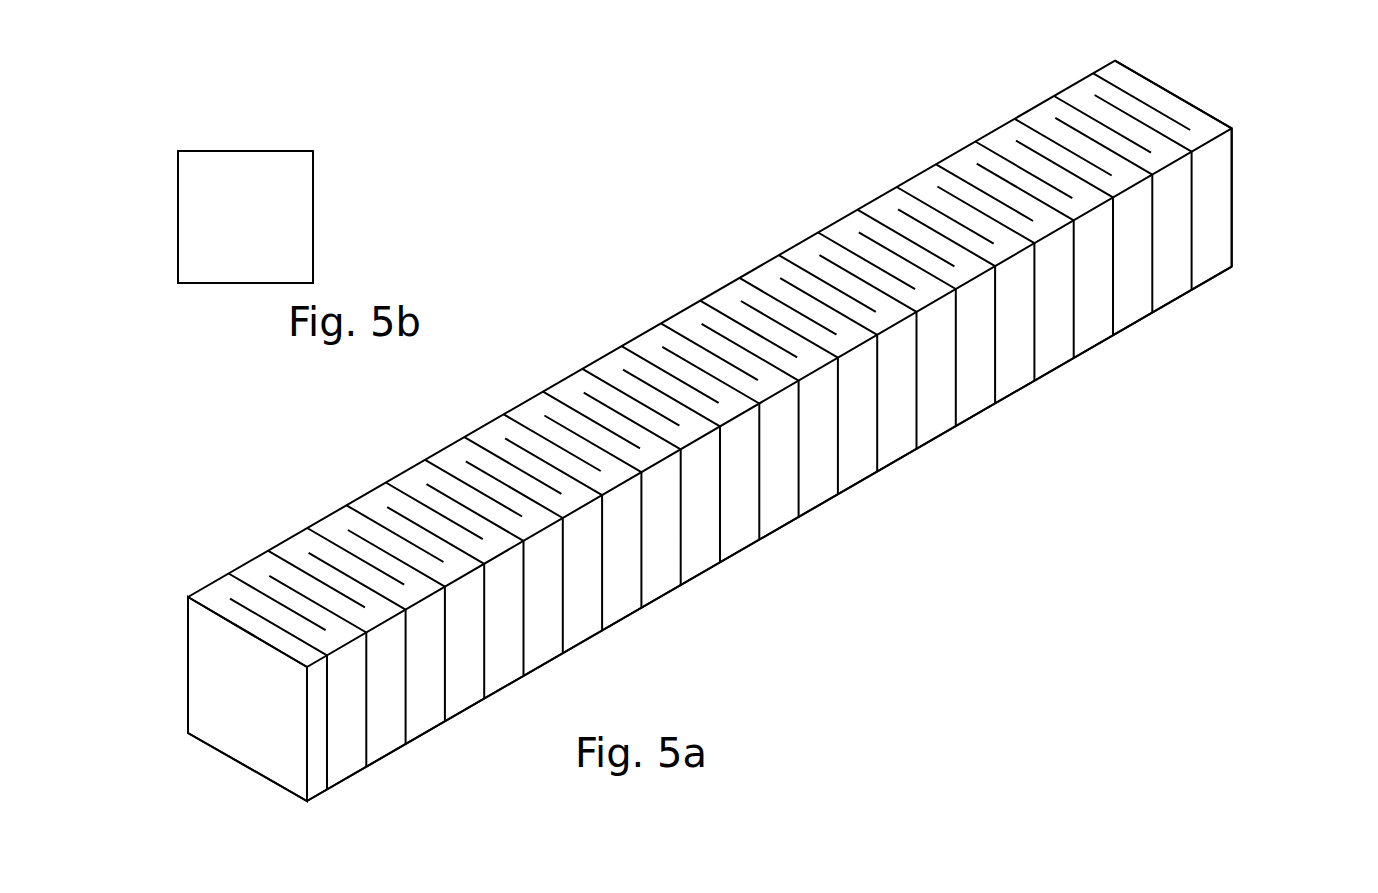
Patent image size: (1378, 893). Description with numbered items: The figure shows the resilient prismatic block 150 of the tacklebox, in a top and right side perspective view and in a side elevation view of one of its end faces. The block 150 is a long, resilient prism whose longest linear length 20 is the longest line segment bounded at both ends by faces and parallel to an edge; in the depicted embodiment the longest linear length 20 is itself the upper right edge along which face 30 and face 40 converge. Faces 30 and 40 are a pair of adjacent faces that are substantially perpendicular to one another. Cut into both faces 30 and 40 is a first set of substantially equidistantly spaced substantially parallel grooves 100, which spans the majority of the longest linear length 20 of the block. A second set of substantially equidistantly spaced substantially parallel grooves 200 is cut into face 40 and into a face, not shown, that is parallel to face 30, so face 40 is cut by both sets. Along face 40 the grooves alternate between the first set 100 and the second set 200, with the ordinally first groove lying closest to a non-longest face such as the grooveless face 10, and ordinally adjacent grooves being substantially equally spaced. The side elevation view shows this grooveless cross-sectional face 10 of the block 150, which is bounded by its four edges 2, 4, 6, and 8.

In FIG. 5B, the edge 2 is at (313, 163).
In FIG. 5B, the edge 4 is at (253, 150).
In FIG. 5B, the edge 6 is at (178, 238).
In FIG. 5B, the edge 8 is at (210, 283).
In FIG. 5A, the grooveless face 10 is at (200, 683).
In FIG. 5B, the grooveless face 10 is at (201, 201).
In FIG. 5A, the longest linear length 20 is at (900, 458).
In FIG. 5A, the face 30 is at (1022, 361).
In FIG. 5A, the face 40 is at (897, 200).
In FIG. 5A, the first set of substantially equidistantly spaced substantially parallel grooves 100 is at (1215, 130).
In FIG. 5A, the resilient prismatic block 150 is at (655, 342).
In FIG. 5A, the second set of substantially equidistantly spaced substantially parallel grooves 200 is at (1131, 98).